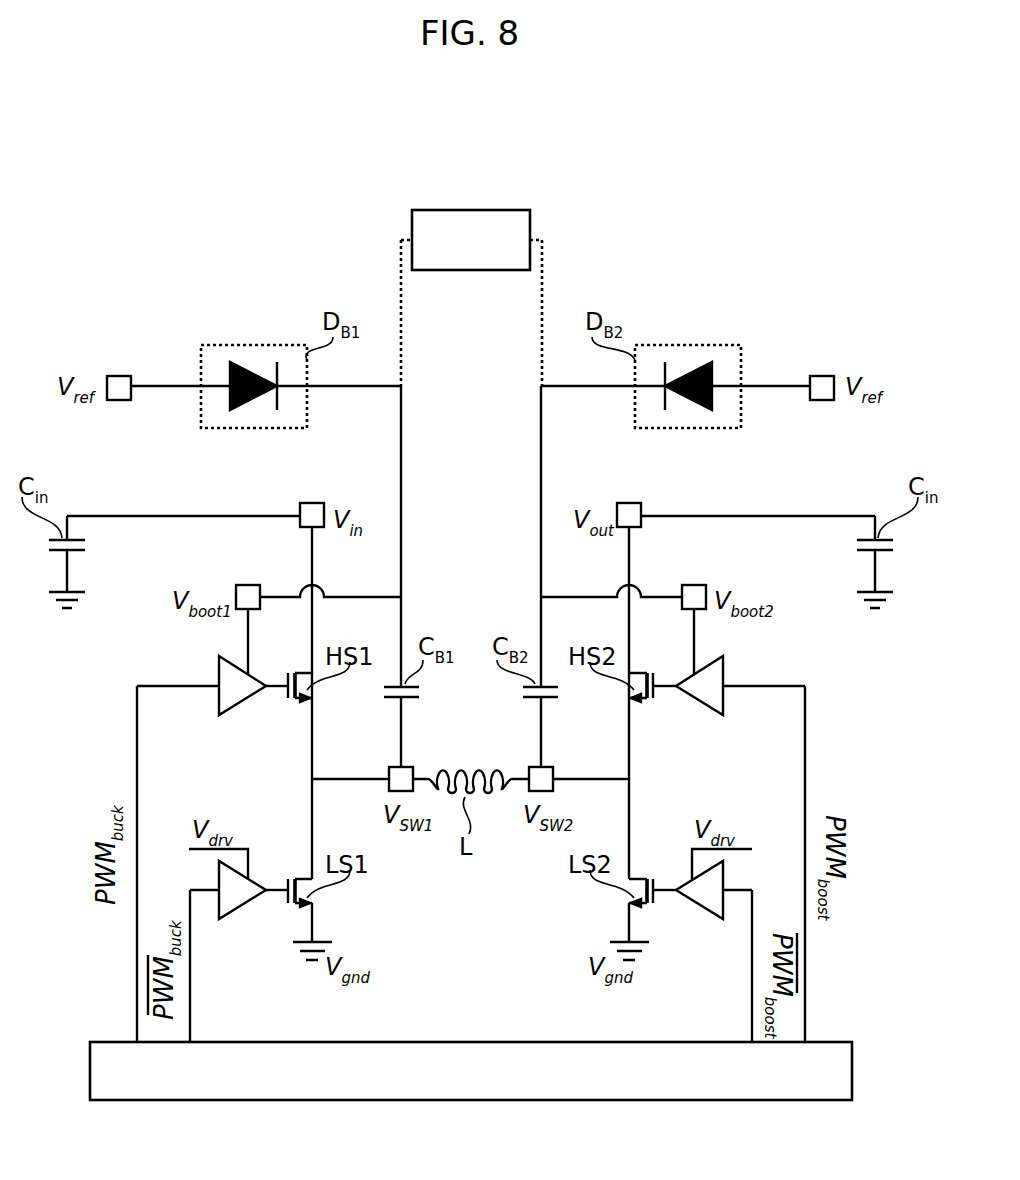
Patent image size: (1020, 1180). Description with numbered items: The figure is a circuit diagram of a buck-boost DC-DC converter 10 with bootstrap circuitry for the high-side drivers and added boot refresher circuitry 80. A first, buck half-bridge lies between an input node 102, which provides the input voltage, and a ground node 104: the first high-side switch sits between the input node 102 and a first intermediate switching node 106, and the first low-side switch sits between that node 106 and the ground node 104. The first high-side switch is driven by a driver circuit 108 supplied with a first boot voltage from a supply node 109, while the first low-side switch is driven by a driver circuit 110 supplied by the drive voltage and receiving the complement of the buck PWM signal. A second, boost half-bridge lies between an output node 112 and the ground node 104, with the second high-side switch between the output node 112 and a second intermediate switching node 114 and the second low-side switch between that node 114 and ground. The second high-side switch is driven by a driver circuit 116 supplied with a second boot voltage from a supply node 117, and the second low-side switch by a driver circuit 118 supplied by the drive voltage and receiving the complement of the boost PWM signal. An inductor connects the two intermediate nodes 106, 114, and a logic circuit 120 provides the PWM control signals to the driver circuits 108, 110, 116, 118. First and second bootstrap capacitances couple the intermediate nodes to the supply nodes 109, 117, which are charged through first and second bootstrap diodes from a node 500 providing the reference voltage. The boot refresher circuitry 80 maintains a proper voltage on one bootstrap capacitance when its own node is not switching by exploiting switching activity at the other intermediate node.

The buck-boost DC-DC converter 10 is at (699, 197).
The boot refresher circuitry 80 is at (437, 210).
The reference voltage node 500 is at (822, 376).
The input node 102 is at (312, 503).
The reference or ground node 104 is at (637, 962).
The first intermediate switching node 106 is at (395, 767).
The high-side driver circuit 108 is at (244, 698).
The first supply node 109 is at (248, 585).
The low-side driver circuit 110 is at (244, 903).
The output node 112 is at (629, 503).
The second intermediate switching node 114 is at (548, 767).
The high-side driver circuit 116 is at (697, 698).
The second supply node 117 is at (694, 585).
The low-side driver circuit 118 is at (697, 903).
The logic circuit 120 is at (485, 1042).